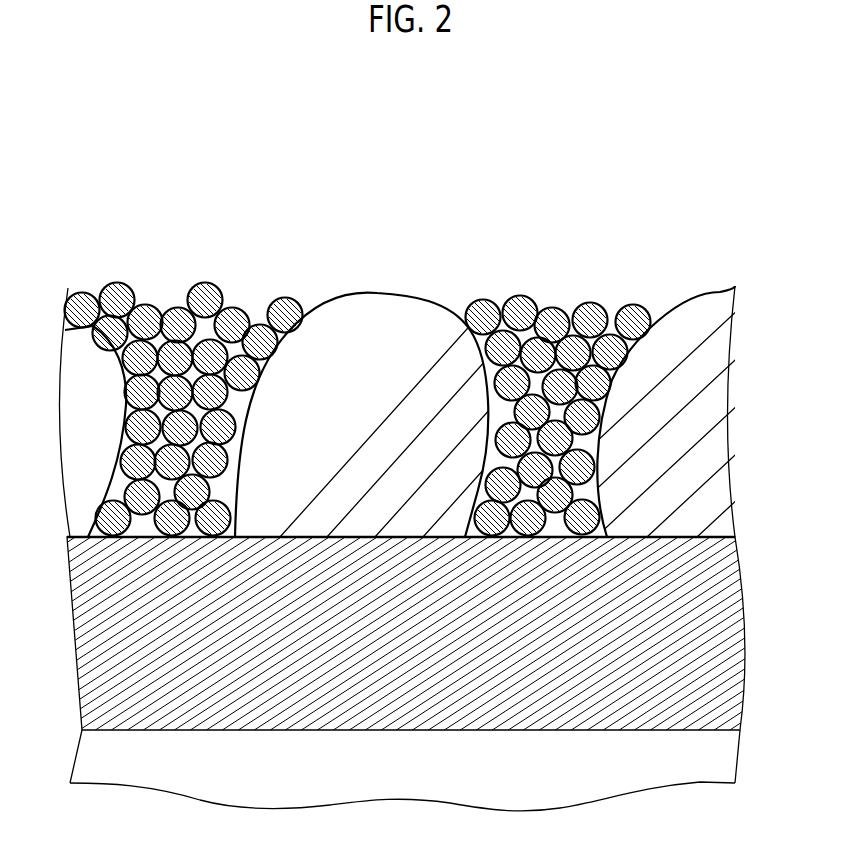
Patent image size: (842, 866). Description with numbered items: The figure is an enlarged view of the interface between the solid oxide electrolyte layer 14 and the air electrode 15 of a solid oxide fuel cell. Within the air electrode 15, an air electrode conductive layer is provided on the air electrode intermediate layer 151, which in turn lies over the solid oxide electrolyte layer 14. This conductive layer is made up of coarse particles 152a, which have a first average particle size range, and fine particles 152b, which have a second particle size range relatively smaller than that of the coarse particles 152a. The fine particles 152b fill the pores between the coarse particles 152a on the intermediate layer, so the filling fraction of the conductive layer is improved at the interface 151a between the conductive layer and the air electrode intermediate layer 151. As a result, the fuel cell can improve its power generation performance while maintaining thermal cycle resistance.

The solid oxide electrolyte layer 14 is at (690, 753).
The air electrode 15 is at (454, 348).
The air electrode intermediate layer 151 is at (498, 692).
The interface 151a is at (327, 537).
The coarse particles 152a is at (380, 305).
The fine particles 152b is at (210, 282).